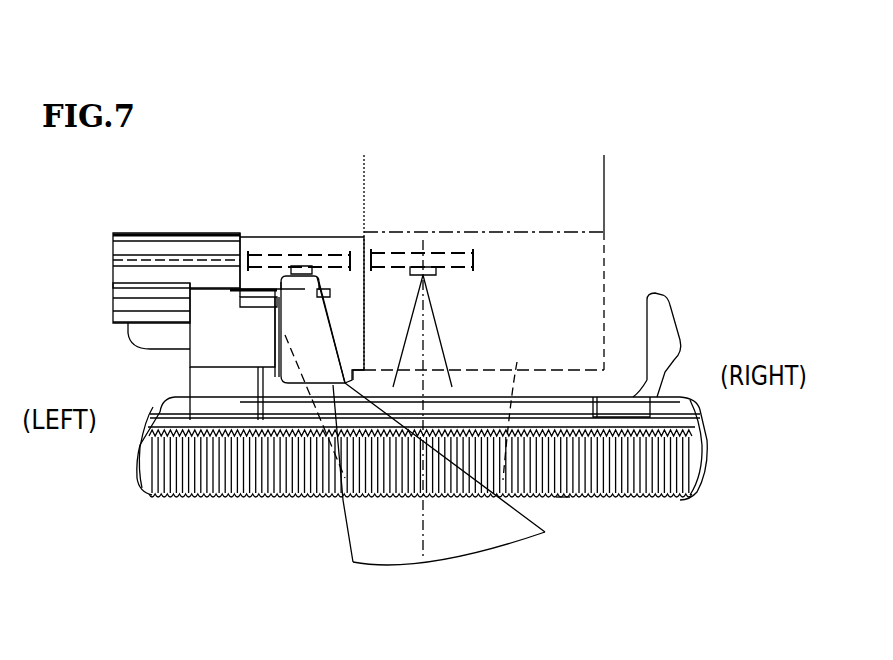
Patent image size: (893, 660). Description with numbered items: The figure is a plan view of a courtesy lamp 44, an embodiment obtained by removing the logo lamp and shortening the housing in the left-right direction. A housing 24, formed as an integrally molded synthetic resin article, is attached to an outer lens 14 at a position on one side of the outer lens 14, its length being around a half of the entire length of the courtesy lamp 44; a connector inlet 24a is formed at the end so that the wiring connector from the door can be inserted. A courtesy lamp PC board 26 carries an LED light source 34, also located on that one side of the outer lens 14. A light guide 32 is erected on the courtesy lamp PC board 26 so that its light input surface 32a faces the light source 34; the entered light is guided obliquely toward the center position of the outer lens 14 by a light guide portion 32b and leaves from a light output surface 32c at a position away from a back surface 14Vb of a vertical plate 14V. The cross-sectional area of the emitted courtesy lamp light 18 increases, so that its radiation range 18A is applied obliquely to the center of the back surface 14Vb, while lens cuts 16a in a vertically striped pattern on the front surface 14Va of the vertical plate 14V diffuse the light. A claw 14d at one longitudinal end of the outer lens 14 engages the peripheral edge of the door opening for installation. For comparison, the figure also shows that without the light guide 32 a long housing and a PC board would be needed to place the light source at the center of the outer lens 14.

The courtesy lamp 44 is at (647, 198).
The housing 24 is at (200, 233).
The connector inlet 24a is at (135, 259).
The courtesy lamp PC board 26 is at (300, 268).
The courtesy lamp light source 34 is at (302, 268).
The light guide 32 is at (300, 333).
The light input surface 32a is at (295, 270).
The light guide portion 32b is at (317, 357).
The light output surface 32c is at (340, 433).
The outer lens 14 is at (712, 442).
The claw 14d is at (667, 331).
The vertical plate 14V is at (650, 478).
The front surface 14Va is at (618, 498).
The back surface 14Vb is at (518, 407).
The lens cuts 16a is at (563, 500).
The courtesy lamp light 18 is at (343, 538).
The radiation range 18A is at (433, 567).